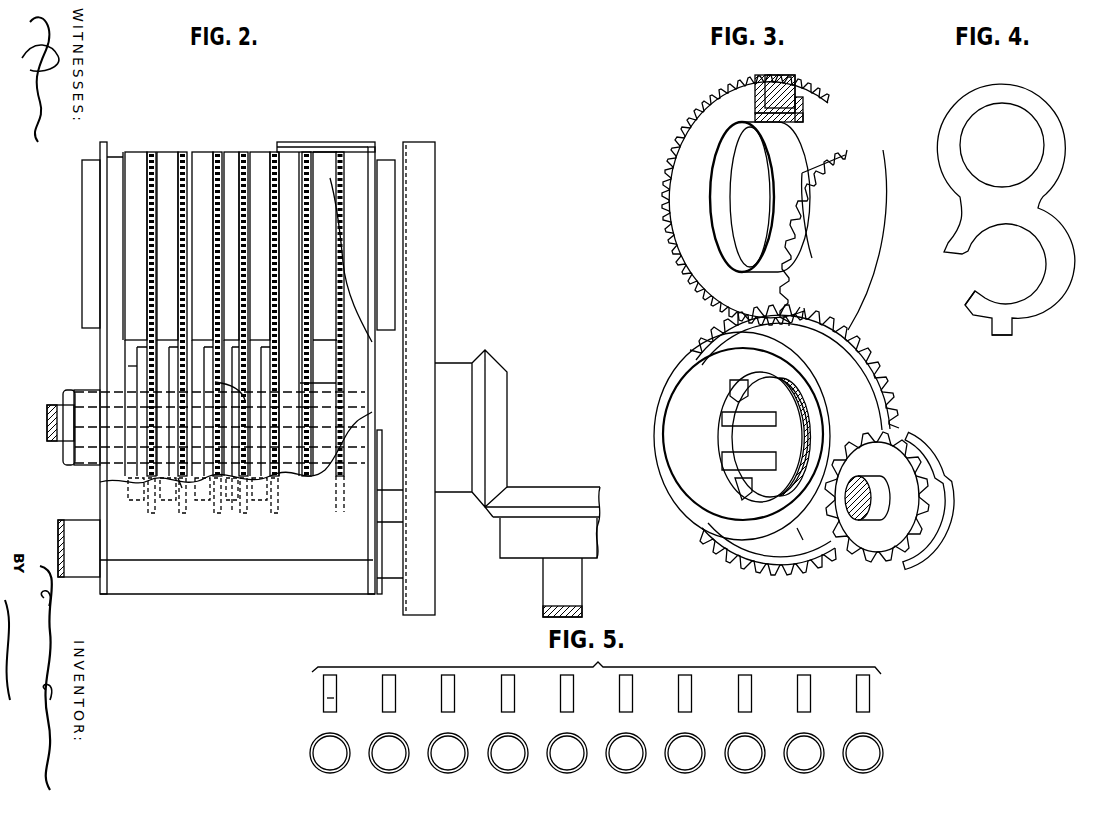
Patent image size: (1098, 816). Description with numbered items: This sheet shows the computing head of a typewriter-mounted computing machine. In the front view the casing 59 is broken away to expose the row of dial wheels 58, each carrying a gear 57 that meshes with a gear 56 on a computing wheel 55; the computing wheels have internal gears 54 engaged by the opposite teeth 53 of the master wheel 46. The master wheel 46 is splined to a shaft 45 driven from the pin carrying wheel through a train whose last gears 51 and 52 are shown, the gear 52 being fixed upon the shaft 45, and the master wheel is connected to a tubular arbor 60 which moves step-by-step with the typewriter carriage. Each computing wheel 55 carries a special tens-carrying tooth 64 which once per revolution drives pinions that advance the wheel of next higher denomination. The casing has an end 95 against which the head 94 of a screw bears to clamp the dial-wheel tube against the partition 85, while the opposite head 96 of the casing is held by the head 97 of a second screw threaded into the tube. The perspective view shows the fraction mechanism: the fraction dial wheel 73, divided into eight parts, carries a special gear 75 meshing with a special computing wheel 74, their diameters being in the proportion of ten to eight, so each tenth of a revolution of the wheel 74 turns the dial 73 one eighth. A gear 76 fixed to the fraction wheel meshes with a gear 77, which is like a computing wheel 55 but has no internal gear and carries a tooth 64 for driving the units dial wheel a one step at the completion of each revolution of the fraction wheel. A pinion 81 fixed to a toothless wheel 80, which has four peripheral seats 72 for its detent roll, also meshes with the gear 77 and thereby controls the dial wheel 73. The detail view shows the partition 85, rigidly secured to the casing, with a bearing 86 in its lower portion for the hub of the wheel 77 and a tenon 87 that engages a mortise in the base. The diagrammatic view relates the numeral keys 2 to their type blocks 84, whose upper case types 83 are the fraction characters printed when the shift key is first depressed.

In FIG. 5, the numeral keys 2 is at (433, 765).
In FIG. 2, the shaft 45 is at (58, 446).
In FIG. 2, the master wheel 46 is at (239, 510).
In FIG. 2, the gear 51 is at (542, 551).
In FIG. 2, the gear 52 is at (472, 428).
In FIG. 2, the opposite teeth 53 is at (215, 382).
In FIG. 3, the internal gears 54 is at (722, 452).
In FIG. 2, the computing wheels 55 is at (128, 366).
In FIG. 2, the gears 56 is at (178, 478).
In FIG. 2, the gears 57 is at (216, 152).
In FIG. 2, the dial wheels 58 is at (168, 152).
In FIG. 2, the casing 59 is at (236, 545).
In FIG. 2, the tubular arbor 60 is at (70, 466).
In FIG. 3, the tens-carrying tooth 64 is at (800, 533).
In FIG. 3, the peripheral depressions or seats 72 is at (946, 468).
In FIG. 2, the fraction dial wheel 73 is at (322, 162).
In FIG. 3, the fraction dial wheel 73 is at (790, 77).
In FIG. 2, the special computing wheel 74 is at (330, 372).
In FIG. 3, the special computing wheel 74 is at (887, 342).
In FIG. 2, the special gear 75 is at (343, 157).
In FIG. 3, the special gear 75 is at (803, 99).
In FIG. 2, the gear 76 is at (306, 160).
In FIG. 3, the gear 76 is at (688, 272).
In FIG. 2, the gear 77 is at (318, 383).
In FIG. 3, the gear 77 is at (706, 345).
In FIG. 3, the special wheel 80 is at (925, 438).
In FIG. 3, the pinion 81 is at (867, 483).
In FIG. 4, the upper case types 83 is at (1054, 157).
In FIG. 5, the upper case types 83 is at (325, 700).
In FIG. 5, the type blocks 84 is at (325, 688).
In FIG. 2, the partition 85 is at (287, 168).
In FIG. 4, the bearing 86 is at (988, 300).
In FIG. 4, the tenon 87 is at (1012, 329).
In FIG. 2, the head 94 is at (387, 237).
In FIG. 2, the end of the casing 95 is at (377, 150).
In FIG. 2, the opposite head of the casing 96 is at (103, 142).
In FIG. 2, the head 97 is at (82, 247).
In FIG. 2, the units wheel a is at (289, 293).